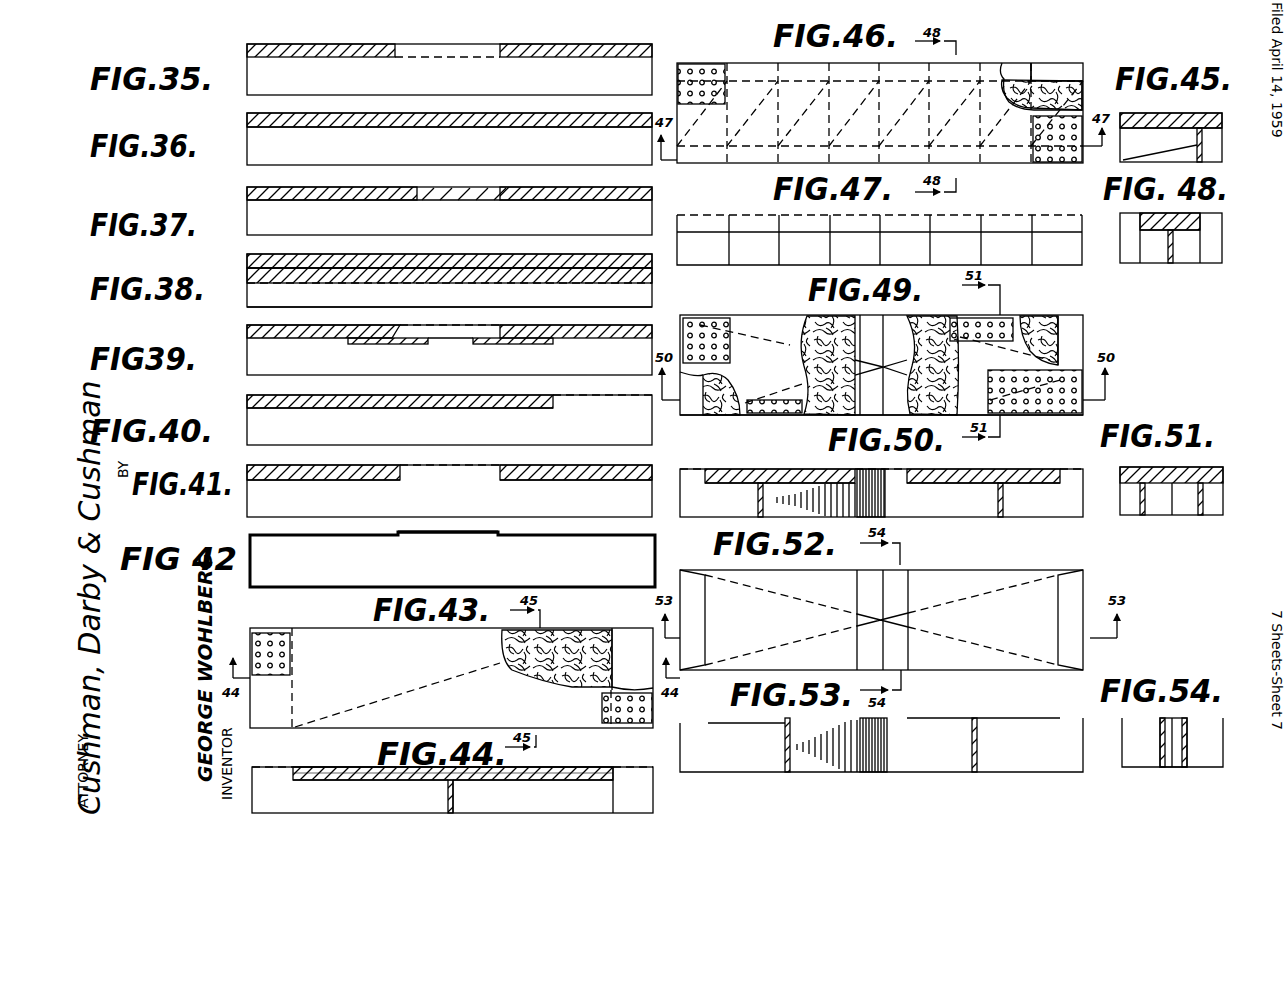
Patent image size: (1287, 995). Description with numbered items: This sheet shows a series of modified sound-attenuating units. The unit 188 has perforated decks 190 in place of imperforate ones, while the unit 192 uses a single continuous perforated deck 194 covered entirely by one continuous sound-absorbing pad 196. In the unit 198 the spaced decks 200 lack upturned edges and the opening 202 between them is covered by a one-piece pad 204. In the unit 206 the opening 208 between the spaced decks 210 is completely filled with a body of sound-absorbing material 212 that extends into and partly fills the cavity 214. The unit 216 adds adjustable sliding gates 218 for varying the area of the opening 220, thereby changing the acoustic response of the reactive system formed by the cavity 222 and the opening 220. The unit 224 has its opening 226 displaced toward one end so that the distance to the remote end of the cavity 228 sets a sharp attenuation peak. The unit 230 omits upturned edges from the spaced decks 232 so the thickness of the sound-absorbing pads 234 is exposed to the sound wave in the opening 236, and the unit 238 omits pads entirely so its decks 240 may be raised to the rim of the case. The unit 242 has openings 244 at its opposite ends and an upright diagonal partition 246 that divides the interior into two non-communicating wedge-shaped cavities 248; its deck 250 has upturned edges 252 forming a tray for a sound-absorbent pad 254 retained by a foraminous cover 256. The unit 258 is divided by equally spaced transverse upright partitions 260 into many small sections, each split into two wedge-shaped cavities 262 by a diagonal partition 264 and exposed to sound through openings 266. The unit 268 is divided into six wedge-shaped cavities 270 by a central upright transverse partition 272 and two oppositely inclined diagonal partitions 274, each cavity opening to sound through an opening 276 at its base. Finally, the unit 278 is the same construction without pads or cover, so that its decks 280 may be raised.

In FIG. 35, the unit 188 is at (240, 88).
In FIG. 35, the decks 190 is at (394, 57).
In FIG. 36, the unit 192 is at (244, 158).
In FIG. 36, the perforated deck 194 is at (389, 127).
In FIG. 36, the pad 196 is at (478, 127).
In FIG. 37, the unit 198 is at (244, 220).
In FIG. 37, the spaced decks 200 is at (403, 202).
In FIG. 37, the opening 202 is at (452, 201).
In FIG. 37, the pad 204 is at (321, 201).
In FIG. 38, the unit 206 is at (244, 290).
In FIG. 38, the opening 208 is at (460, 271).
In FIG. 38, the spaced decks 210 is at (344, 271).
In FIG. 38, the body of sound-absorbing material 212 is at (407, 273).
In FIG. 38, the cavity 214 is at (302, 300).
In FIG. 39, the unit 216 is at (244, 356).
In FIG. 39, the sliding gates 218 is at (387, 344).
In FIG. 39, the opening 220 is at (451, 344).
In FIG. 39, the cavity 222 is at (350, 362).
In FIG. 40, the unit 224 is at (244, 420).
In FIG. 40, the opening 226 is at (614, 406).
In FIG. 40, the cavity 228 is at (464, 438).
In FIG. 41, the unit 230 is at (244, 498).
In FIG. 41, the spaced decks 232 is at (355, 480).
In FIG. 41, the sound-absorbing pads 234 is at (323, 480).
In FIG. 41, the opening 236 is at (453, 473).
In FIG. 42, the unit 238 is at (340, 598).
In FIG. 42, the decks 240 is at (332, 536).
In FIG. 43, the unit 242 is at (278, 730).
In FIG. 44, the unit 242 is at (685, 805).
In FIG. 45, the unit 242 is at (1219, 111).
In FIG. 43, the openings 244 is at (630, 636).
In FIG. 44, the openings 244 is at (288, 797).
In FIG. 43, the partition 246 is at (436, 676).
In FIG. 44, the partition 246 is at (456, 785).
In FIG. 45, the partition 246 is at (1135, 164).
In FIG. 44, the cavities 248 is at (606, 791).
In FIG. 45, the cavities 248 is at (1134, 124).
In FIG. 44, the deck 250 is at (415, 780).
In FIG. 45, the deck 250 is at (1128, 130).
In FIG. 43, the upturned edges 252 is at (294, 728).
In FIG. 44, the upturned edges 252 is at (293, 770).
In FIG. 43, the sound-absorbent pad 254 is at (550, 632).
In FIG. 44, the sound-absorbent pad 254 is at (429, 782).
In FIG. 43, the foraminous cover 256 is at (274, 632).
In FIG. 44, the foraminous cover 256 is at (518, 765).
In FIG. 46, the unit 258 is at (738, 50).
In FIG. 47, the unit 258 is at (752, 270).
In FIG. 48, the unit 258 is at (1205, 268).
In FIG. 46, the transverse upright partitions 260 is at (1032, 81).
In FIG. 47, the transverse upright partitions 260 is at (728, 261).
In FIG. 47, the cavities 262 is at (810, 265).
In FIG. 48, the cavities 262 is at (1177, 268).
In FIG. 46, the diagonal partition 264 is at (871, 86).
In FIG. 48, the diagonal partition 264 is at (1175, 263).
In FIG. 46, the openings 266 is at (1014, 65).
In FIG. 48, the openings 266 is at (1138, 214).
In FIG. 49, the unit 268 is at (1086, 340).
In FIG. 50, the unit 268 is at (1025, 520).
In FIG. 51, the unit 268 is at (1188, 520).
In FIG. 49, the cavities 270 is at (818, 433).
In FIG. 50, the cavities 270 is at (1022, 482).
In FIG. 51, the cavities 270 is at (1145, 517).
In FIG. 49, the central upright transverse partition 272 is at (883, 330).
In FIG. 50, the central upright transverse partition 272 is at (885, 490).
In FIG. 49, the diagonal partitions 274 is at (784, 347).
In FIG. 50, the diagonal partitions 274 is at (755, 502).
In FIG. 51, the diagonal partitions 274 is at (1205, 500).
In FIG. 49, the opening 276 is at (807, 315).
In FIG. 50, the opening 276 is at (1077, 483).
In FIG. 52, the unit 278 is at (1090, 595).
In FIG. 53, the unit 278 is at (1056, 774).
In FIG. 54, the unit 278 is at (1153, 770).
In FIG. 53, the decks 280 is at (753, 724).